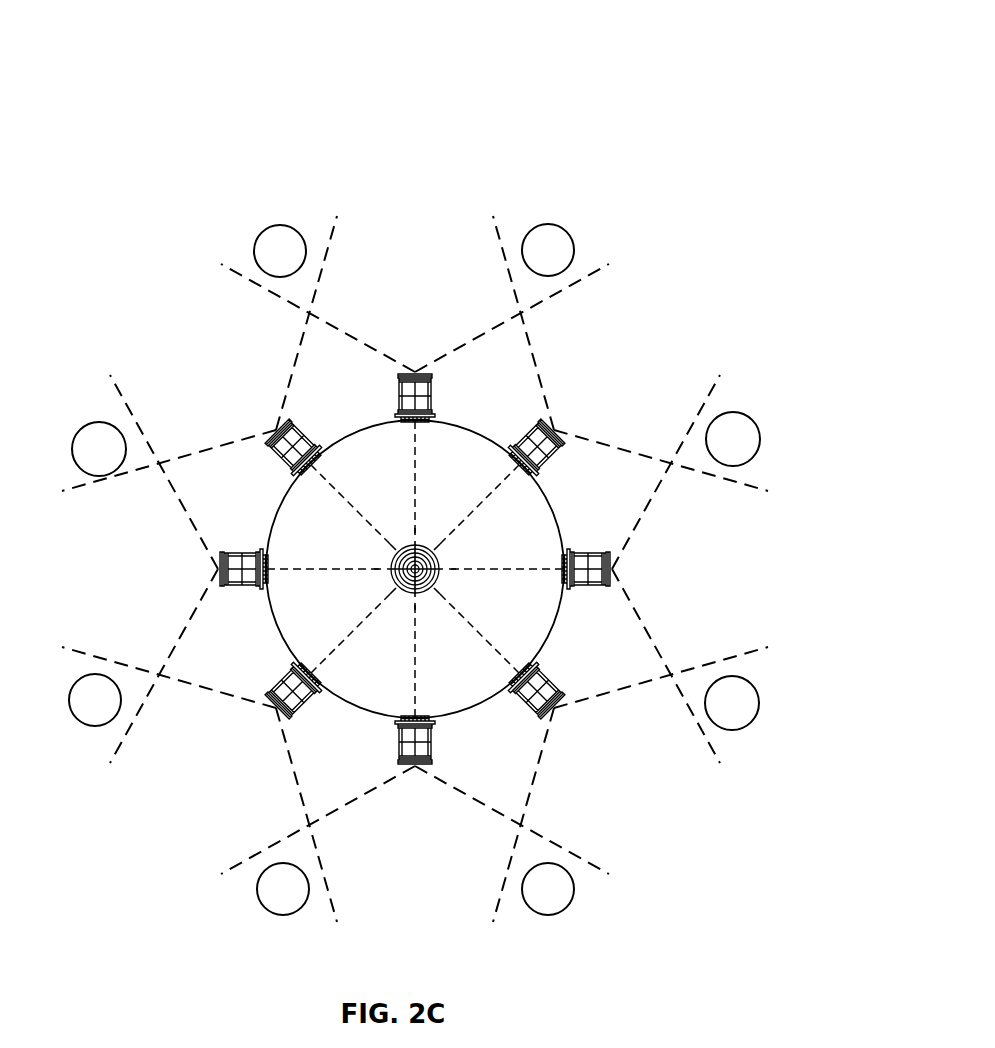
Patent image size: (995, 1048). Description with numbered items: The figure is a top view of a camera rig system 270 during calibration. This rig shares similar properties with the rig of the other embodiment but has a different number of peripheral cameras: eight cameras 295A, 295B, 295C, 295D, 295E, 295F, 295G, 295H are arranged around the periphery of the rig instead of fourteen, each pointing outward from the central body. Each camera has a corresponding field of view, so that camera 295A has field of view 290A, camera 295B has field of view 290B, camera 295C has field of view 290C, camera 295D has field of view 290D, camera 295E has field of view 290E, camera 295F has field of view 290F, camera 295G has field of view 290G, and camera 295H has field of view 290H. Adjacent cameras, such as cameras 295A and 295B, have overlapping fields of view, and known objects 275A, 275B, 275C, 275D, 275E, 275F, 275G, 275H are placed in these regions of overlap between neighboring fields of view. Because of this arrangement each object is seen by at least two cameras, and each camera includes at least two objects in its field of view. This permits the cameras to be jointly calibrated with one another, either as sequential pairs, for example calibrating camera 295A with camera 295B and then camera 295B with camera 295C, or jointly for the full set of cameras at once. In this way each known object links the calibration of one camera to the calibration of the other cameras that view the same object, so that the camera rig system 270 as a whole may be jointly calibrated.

The camera rig system 270 is at (21, 43).
The known object 275A is at (258, 212).
The known object 275B is at (524, 212).
The known object 275C is at (725, 396).
The known object 275D is at (722, 793).
The known object 275E is at (534, 977).
The known object 275F is at (229, 977).
The known object 275G is at (9, 715).
The known object 275H is at (29, 413).
The field of view 290A is at (391, 332).
The field of view 290B is at (605, 408).
The field of view 290C is at (675, 590).
The field of view 290D is at (605, 773).
The field of view 290E is at (392, 853).
The field of view 290F is at (185, 778).
The field of view 290G is at (94, 606).
The field of view 290H is at (177, 431).
The peripheral camera 295A is at (487, 405).
The peripheral camera 295B is at (599, 486).
The peripheral camera 295C is at (575, 610).
The peripheral camera 295D is at (487, 723).
The peripheral camera 295E is at (385, 755).
The peripheral camera 295F is at (233, 686).
The peripheral camera 295G is at (215, 540).
The peripheral camera 295H is at (299, 434).